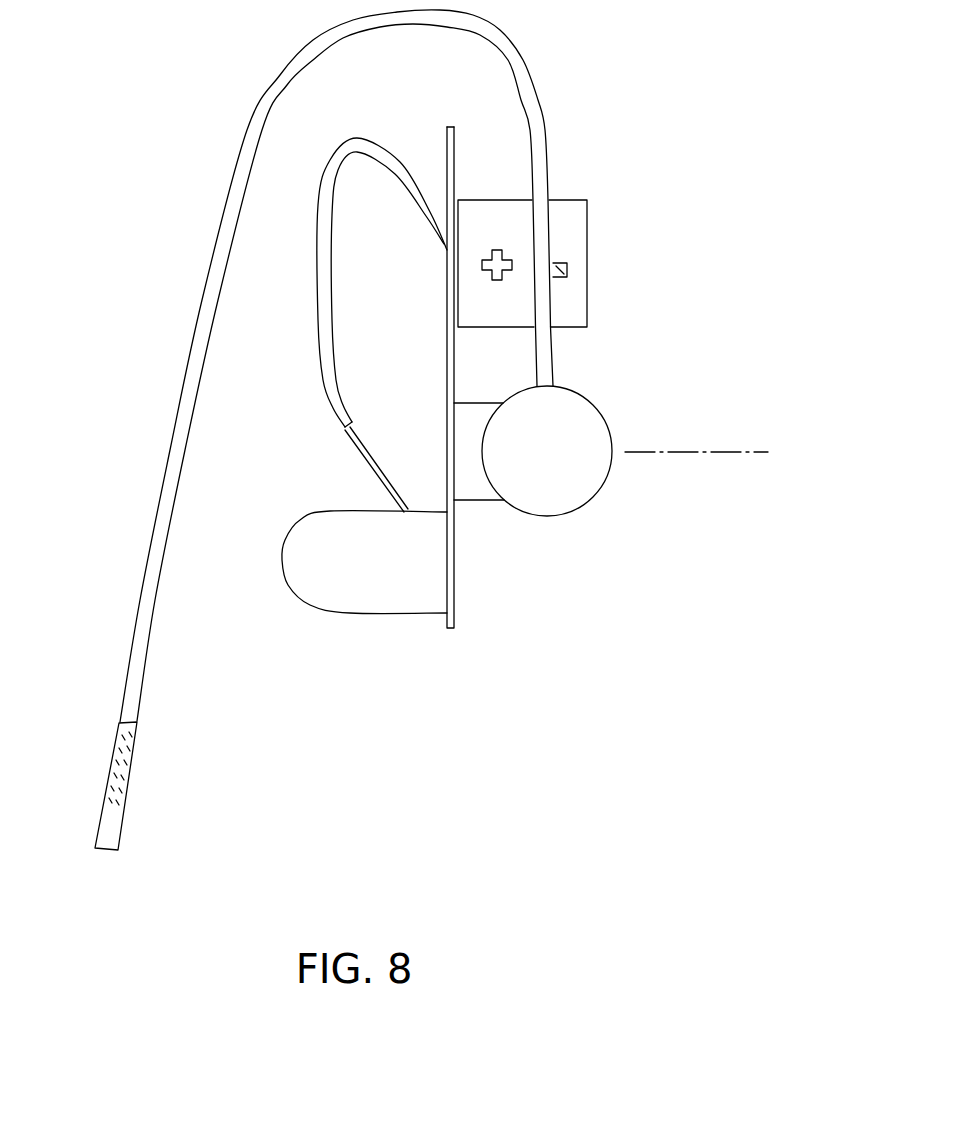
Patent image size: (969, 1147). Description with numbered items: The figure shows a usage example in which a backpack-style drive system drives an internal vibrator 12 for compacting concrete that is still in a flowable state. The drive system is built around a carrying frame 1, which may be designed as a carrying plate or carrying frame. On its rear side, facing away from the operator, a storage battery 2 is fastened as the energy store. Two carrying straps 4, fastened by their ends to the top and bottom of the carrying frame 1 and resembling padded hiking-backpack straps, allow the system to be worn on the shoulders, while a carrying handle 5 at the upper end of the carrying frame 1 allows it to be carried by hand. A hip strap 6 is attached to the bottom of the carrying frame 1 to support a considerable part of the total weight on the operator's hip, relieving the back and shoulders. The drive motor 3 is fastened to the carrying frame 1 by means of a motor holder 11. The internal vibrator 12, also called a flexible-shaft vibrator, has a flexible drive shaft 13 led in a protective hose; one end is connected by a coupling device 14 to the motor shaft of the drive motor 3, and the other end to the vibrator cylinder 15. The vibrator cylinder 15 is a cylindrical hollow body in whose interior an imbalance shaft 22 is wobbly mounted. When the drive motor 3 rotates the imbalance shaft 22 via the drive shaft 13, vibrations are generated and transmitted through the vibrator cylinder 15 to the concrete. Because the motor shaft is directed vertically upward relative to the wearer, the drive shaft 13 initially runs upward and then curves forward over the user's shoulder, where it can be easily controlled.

The carrying frame 1 is at (455, 156).
The storage battery 2 is at (587, 252).
The drive motor 3 is at (610, 478).
The carrying straps 4 is at (357, 140).
The carrying handle 5 is at (447, 129).
The hip strap 6 is at (315, 533).
The motor holder 11 is at (492, 502).
The internal vibrator 12 is at (146, 237).
The flexible drive shaft 13 is at (181, 408).
The coupling device 14 is at (553, 373).
The vibrator cylinder 15 is at (112, 757).
The imbalance shaft 22 is at (110, 794).